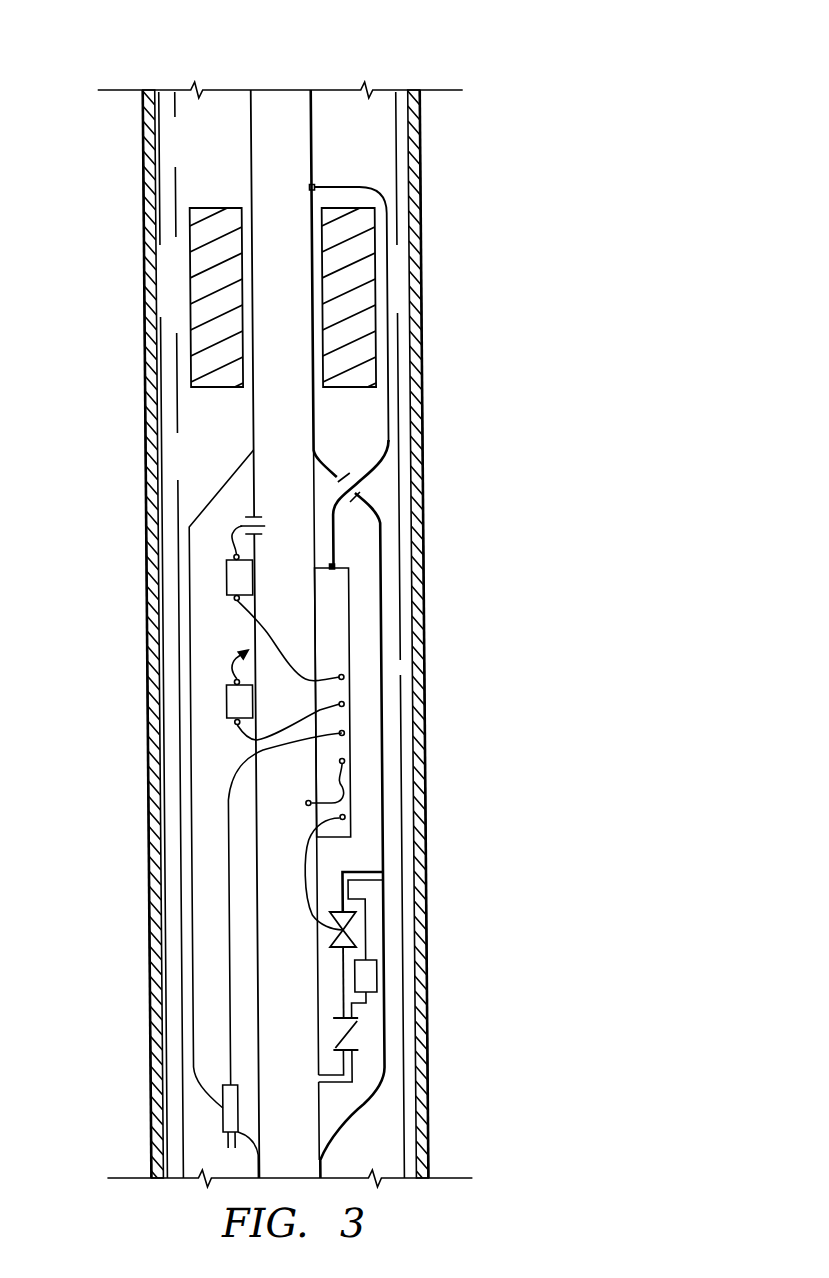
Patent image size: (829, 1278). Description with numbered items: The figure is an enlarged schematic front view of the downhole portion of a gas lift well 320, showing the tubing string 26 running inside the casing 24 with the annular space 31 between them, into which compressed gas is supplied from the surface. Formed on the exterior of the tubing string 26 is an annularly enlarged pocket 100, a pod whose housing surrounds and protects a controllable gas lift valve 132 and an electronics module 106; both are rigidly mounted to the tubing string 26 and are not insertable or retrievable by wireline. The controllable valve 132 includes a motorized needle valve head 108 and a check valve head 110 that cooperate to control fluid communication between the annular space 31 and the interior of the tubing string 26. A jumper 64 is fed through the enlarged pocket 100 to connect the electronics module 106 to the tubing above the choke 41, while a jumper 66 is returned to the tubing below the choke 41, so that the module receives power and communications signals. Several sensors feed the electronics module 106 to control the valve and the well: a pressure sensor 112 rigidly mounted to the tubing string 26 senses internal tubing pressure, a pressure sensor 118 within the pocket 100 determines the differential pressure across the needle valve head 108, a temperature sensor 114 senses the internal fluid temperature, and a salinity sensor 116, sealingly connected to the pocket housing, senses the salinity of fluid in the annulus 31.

The gas lift well 320 is at (393, 49).
The casing 24 is at (420, 157).
The tubing string 26 is at (311, 118).
The choke 41 is at (371, 310).
The jumper 64 is at (386, 258).
The annular space 31 is at (390, 463).
The enlarged pocket 100 is at (214, 492).
The electronics module 106 is at (339, 588).
The pressure sensor 112 is at (222, 580).
The temperature sensor 114 is at (221, 702).
The jumper 66 is at (344, 784).
The controllable gas lift valve 132 is at (398, 878).
The motorized needle valve head 108 is at (340, 940).
The pressure sensor 118 is at (369, 975).
The check valve head 110 is at (349, 1041).
The salinity sensor 116 is at (215, 1117).